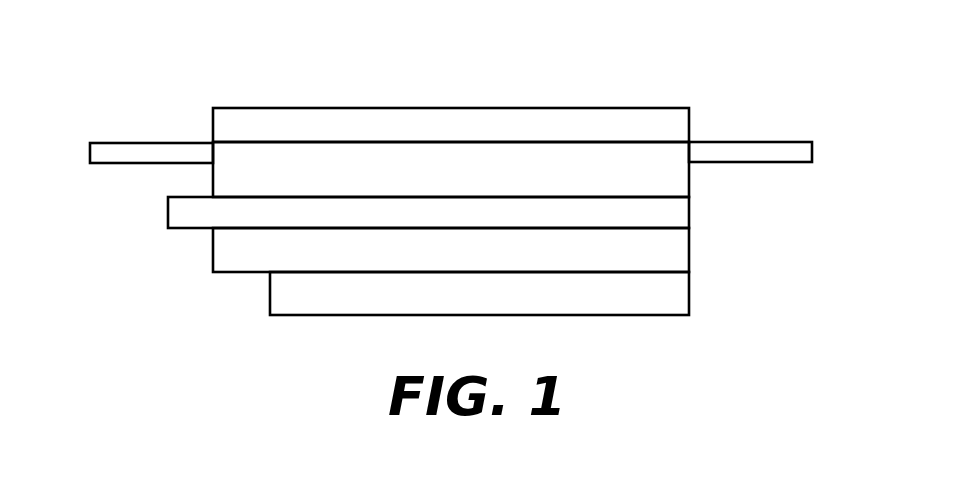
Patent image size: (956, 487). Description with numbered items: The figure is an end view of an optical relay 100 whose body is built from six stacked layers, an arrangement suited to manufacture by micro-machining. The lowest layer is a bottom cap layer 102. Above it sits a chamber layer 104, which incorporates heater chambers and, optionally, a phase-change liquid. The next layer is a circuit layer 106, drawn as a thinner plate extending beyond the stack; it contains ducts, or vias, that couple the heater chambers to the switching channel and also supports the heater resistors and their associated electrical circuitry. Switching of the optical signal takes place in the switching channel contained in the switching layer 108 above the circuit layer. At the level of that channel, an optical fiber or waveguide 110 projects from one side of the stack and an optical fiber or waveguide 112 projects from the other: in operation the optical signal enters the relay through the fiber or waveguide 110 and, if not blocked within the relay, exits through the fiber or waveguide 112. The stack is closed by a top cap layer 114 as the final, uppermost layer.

The optical relay 100 is at (167, 35).
The bottom cap layer 102 is at (615, 313).
The chamber layer 104 is at (690, 250).
The circuit layer 106 is at (165, 213).
The switching layer 108 is at (692, 178).
The optical fiber or waveguide 110 is at (120, 142).
The optical fiber or waveguide 112 is at (773, 140).
The top cap layer 114 is at (285, 108).